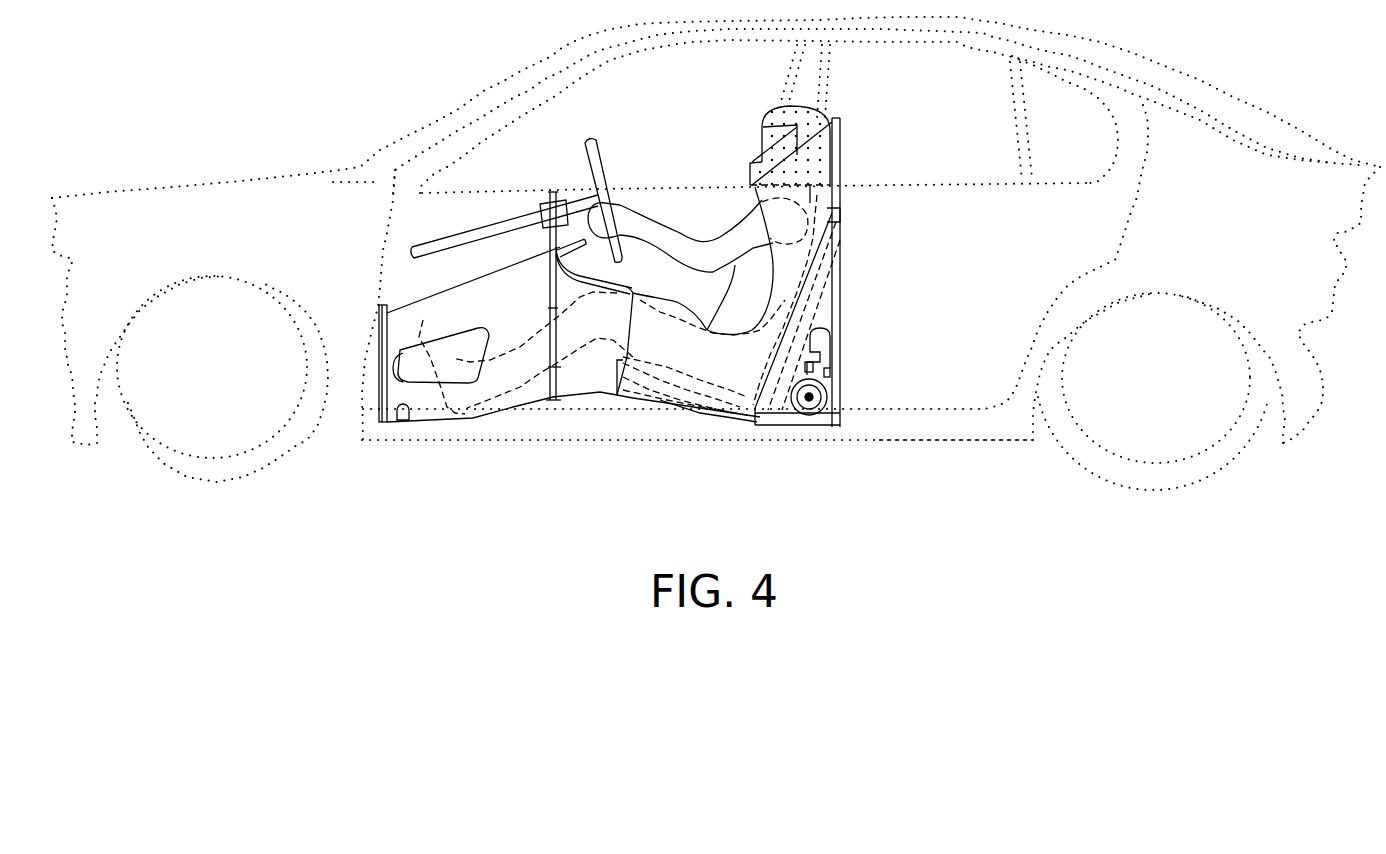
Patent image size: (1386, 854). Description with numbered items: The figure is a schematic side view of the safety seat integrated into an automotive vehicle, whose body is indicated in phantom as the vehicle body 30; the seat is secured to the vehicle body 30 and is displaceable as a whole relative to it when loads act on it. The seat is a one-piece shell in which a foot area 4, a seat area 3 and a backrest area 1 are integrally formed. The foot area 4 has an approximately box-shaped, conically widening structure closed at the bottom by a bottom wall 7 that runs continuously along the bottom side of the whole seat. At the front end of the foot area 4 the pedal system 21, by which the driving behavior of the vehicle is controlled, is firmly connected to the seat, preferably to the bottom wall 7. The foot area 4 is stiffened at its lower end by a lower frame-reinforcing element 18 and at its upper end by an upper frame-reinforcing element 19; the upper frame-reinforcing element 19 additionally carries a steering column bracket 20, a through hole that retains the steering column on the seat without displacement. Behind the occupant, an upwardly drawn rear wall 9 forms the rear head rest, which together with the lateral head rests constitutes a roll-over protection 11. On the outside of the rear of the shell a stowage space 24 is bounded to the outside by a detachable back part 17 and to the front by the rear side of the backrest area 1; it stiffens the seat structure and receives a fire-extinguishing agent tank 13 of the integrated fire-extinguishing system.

The backrest area 1 is at (763, 417).
The seat area 3 is at (747, 415).
The foot area 4 is at (523, 396).
The bottom wall 7 is at (595, 397).
The rear wall 9 is at (842, 140).
The roll-over protection 11 is at (835, 122).
The fire-extinguishing agent tank 13 is at (811, 410).
The back part 17 is at (840, 413).
The lower frame-reinforcing element 18 is at (379, 388).
The upper frame-reinforcing element 19 is at (565, 403).
The steering column bracket 20 is at (542, 192).
The pedal system 21 is at (422, 400).
The stowage space 24 is at (793, 415).
The vehicle body 30 is at (952, 440).